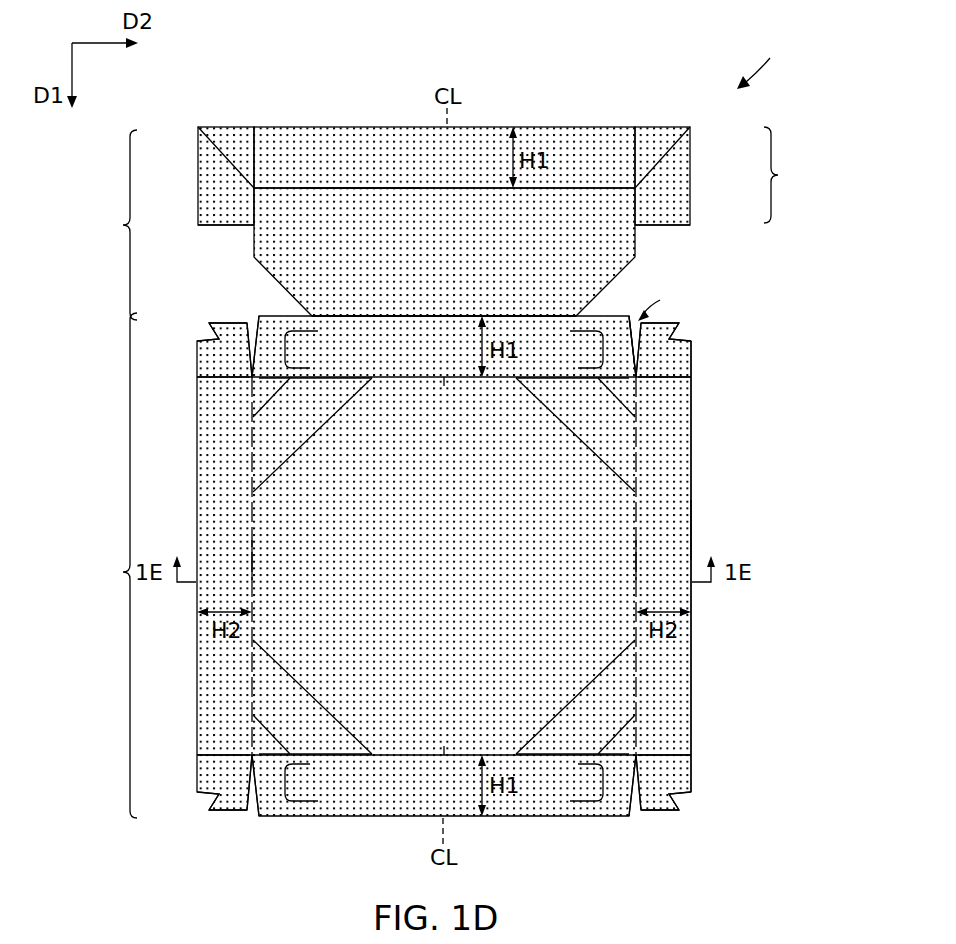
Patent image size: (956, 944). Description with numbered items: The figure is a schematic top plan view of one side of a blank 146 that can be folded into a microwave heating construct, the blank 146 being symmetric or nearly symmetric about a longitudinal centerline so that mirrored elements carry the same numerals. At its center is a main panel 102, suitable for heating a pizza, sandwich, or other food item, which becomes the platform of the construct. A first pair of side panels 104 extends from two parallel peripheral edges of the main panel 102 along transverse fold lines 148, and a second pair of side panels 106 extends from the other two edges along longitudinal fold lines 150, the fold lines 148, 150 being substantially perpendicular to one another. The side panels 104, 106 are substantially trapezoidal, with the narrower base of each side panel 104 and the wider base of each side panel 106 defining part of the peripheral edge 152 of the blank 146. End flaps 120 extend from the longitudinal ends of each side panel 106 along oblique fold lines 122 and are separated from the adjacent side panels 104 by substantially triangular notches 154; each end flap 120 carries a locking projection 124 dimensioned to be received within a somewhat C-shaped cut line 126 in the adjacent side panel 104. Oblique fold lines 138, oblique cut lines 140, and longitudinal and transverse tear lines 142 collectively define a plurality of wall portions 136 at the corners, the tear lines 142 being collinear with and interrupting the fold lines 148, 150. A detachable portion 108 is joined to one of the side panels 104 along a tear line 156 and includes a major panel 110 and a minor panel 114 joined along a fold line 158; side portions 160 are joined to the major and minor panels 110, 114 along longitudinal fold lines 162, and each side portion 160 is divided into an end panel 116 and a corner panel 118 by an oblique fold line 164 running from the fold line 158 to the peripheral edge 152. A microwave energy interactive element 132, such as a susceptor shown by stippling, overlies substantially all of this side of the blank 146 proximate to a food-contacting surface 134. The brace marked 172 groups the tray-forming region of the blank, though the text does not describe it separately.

The main panel 102 is at (465, 568).
The side panels (first pair) 104 is at (461, 361).
The side panels (second pair) 106 is at (235, 573).
The detachable portion 108 is at (109, 225).
The major panel 110 is at (547, 248).
The minor panel 114 is at (467, 173).
The end panel 116 is at (197, 209).
The corner panel 118 is at (230, 138).
The end flap 120 is at (235, 366).
The oblique fold line 122 is at (225, 378).
The locking projection 124 is at (216, 330).
The C-shaped cut line 126 is at (288, 325).
The microwave energy interactive element 132 is at (680, 508).
The food-contacting surface 134 is at (464, 641).
The wall portions 136 is at (322, 408).
The oblique fold lines 138 is at (330, 422).
The oblique cut lines 140 is at (262, 408).
The tear lines 142 is at (331, 377).
The blank 146 is at (769, 59).
The transverse fold lines 148 is at (445, 380).
The longitudinal fold lines 150 is at (255, 560).
The peripheral edge 152 is at (693, 530).
The notch 154 is at (657, 327).
The tear line 156 is at (448, 315).
The fold line 158 is at (358, 190).
The side portion 160 is at (793, 175).
The fold lines 162 is at (258, 148).
The oblique fold line 164 is at (212, 150).
The tray portion 172 is at (109, 565).